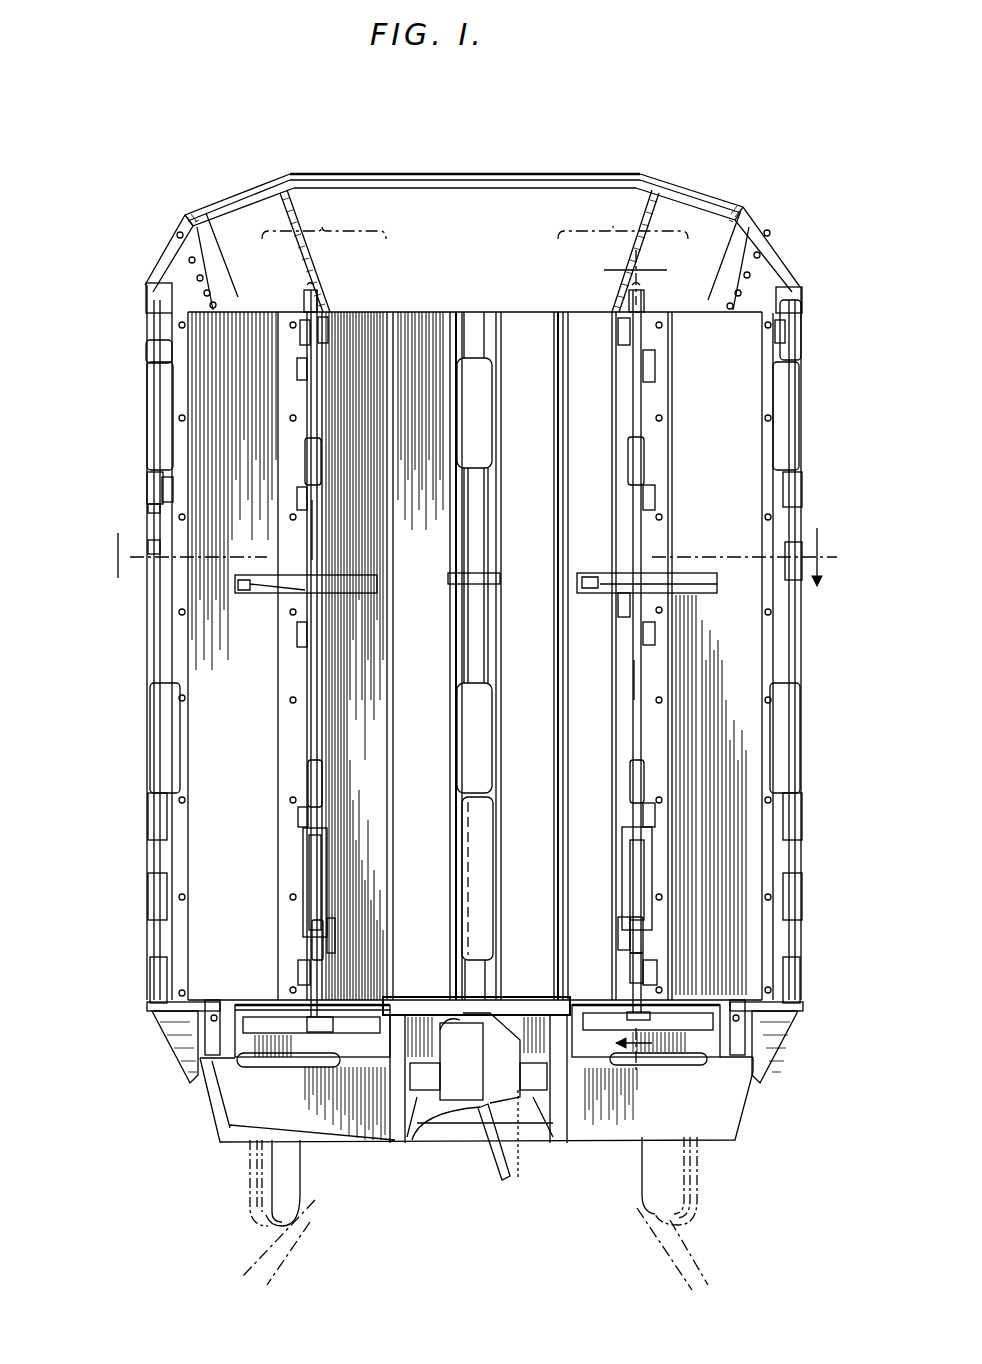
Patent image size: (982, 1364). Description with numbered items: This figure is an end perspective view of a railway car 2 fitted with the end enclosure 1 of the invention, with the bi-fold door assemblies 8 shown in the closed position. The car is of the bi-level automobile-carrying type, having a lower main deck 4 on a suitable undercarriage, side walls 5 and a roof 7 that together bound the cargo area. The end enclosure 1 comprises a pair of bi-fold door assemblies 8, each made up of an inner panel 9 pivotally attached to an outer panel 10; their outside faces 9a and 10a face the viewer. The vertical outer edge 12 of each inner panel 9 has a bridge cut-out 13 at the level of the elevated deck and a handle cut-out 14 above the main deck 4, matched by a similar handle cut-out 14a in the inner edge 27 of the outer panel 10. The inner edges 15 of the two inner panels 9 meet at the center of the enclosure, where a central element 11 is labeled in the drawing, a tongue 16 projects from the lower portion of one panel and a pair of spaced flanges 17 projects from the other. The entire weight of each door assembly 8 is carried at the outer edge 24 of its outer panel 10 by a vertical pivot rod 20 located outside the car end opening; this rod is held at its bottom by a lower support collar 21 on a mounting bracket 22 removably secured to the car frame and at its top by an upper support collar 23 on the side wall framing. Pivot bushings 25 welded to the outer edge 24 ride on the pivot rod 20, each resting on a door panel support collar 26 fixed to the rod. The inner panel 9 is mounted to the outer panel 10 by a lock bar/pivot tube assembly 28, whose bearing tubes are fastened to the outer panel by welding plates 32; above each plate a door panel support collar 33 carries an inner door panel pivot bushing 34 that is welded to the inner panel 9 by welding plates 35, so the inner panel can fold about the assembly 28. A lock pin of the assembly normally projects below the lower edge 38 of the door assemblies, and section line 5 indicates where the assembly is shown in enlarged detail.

The end enclosure 1 is at (522, 283).
The railway car 2 is at (386, 170).
The main deck 4 is at (272, 998).
The side wall 5 is at (628, 659).
The roof 7 is at (470, 184).
The bi-fold door assembly 8 is at (467, 395).
The inner panel 9 is at (425, 305).
The outside face of inner panel 9a is at (520, 322).
The outer panel 10 is at (275, 305).
The outside face of outer panel 10a is at (263, 794).
The center post 11 is at (390, 625).
The vertical outer edge of inner panel 12 is at (318, 724).
The bridge cut-out 13 is at (337, 588).
The handle cut-out 14 is at (327, 848).
The handle cut-out of outer panel 14a is at (655, 870).
The inner edge of inner panel 15 is at (486, 455).
The tongue 16 is at (460, 790).
The flange 17 is at (490, 834).
The pivot rod 20 is at (158, 424).
The lower support collar 21 is at (160, 1001).
The mounting bracket 22 is at (175, 1012).
The upper support collar 23 is at (162, 300).
The outer edge of outer panel 24 is at (160, 374).
The pivot bushing 25 is at (158, 652).
The door panel support collar 26 is at (158, 680).
The inner edge of outer panel 27 is at (312, 688).
The lock bar/pivot tube assembly 28 is at (320, 528).
The welding plate 32 is at (298, 635).
The door panel support collar 33 is at (300, 350).
The inner door panel pivot bushing 34 is at (305, 322).
The welding plate 35 is at (323, 322).
The lower edge of door assembly 38 is at (424, 992).